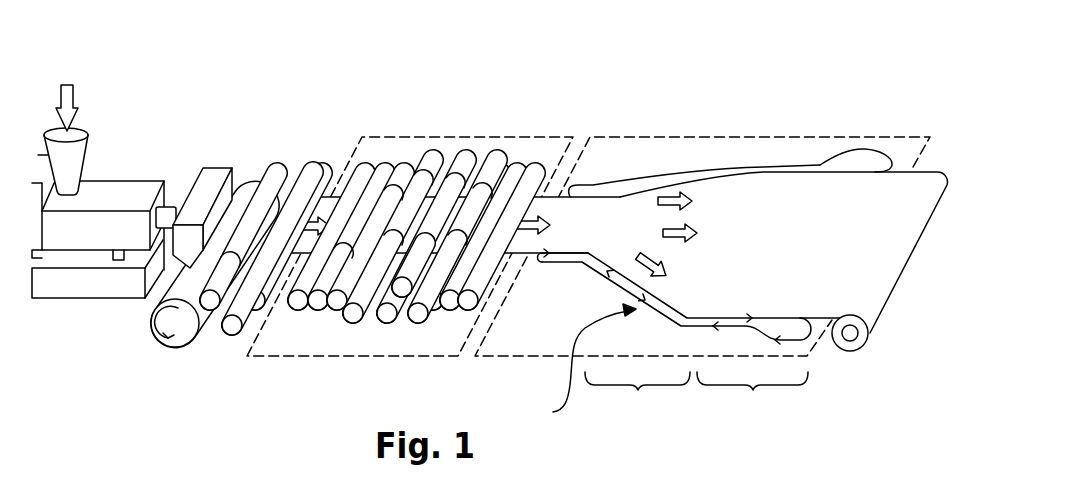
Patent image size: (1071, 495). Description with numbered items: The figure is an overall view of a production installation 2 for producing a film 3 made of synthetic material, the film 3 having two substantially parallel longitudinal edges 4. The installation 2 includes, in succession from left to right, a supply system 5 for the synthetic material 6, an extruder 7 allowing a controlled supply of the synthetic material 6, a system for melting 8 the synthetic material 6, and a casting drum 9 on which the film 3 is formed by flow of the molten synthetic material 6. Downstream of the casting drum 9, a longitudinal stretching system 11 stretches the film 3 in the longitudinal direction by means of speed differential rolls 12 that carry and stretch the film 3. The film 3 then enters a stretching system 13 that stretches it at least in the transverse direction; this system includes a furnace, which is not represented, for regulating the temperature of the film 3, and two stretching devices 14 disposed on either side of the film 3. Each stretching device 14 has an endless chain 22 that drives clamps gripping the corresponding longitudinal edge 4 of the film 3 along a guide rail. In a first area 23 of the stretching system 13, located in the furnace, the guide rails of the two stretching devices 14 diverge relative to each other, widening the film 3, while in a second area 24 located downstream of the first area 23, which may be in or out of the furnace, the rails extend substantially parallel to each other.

The production installation 2 is at (187, 53).
The film 3 is at (340, 207).
The longitudinal edges 4 is at (903, 167).
The supply system 5 is at (90, 153).
The synthetic material 6 is at (74, 97).
The extruder 7 is at (80, 230).
The system for melting 8 is at (208, 185).
The casting drum 9 is at (188, 333).
The longitudinal stretching system 11 is at (497, 152).
The speed differential rolls 12 is at (357, 317).
The stretching system 13 is at (642, 157).
The stretching devices 14 is at (822, 154).
The endless chain 22 is at (787, 162).
The first area 23 is at (637, 397).
The second area 24 is at (752, 397).